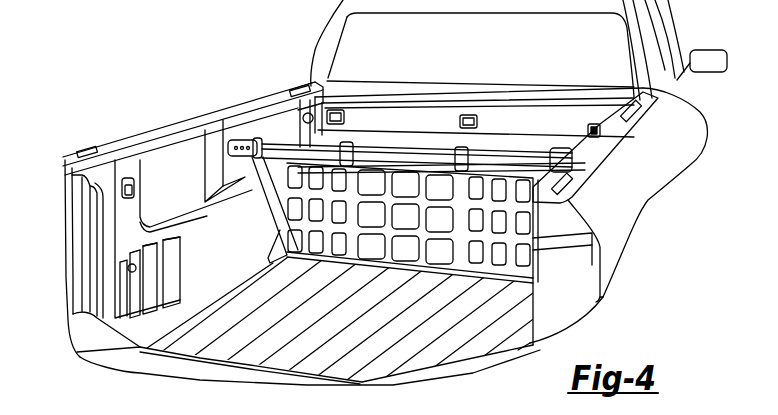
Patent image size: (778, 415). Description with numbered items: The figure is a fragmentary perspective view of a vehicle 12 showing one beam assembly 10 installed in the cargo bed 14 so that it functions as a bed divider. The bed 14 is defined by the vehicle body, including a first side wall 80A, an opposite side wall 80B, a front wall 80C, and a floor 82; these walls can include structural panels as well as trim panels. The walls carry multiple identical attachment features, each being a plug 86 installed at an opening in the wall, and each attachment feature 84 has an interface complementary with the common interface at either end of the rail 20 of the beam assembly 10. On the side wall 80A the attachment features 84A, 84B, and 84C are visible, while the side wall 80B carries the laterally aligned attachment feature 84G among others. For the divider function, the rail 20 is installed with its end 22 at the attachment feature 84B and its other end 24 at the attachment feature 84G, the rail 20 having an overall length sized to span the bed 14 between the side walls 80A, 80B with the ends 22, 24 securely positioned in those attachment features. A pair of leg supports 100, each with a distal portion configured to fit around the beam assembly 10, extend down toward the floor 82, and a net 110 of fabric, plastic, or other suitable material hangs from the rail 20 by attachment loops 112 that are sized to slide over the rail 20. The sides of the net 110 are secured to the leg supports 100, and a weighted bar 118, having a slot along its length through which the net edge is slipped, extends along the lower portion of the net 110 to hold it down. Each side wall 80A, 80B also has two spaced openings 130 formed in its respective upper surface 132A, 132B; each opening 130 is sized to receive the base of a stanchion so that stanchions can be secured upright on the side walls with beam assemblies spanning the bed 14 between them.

The beam assembly 10 is at (359, 109).
The vehicle 12 is at (219, 38).
The cargo bed 14 is at (360, 297).
The rail 20 is at (500, 163).
The end of rail 22 is at (228, 148).
The end of rail 24 is at (590, 155).
The side wall 80A is at (193, 209).
The side wall 80B is at (629, 221).
The front wall 80C is at (470, 107).
The floor 82 is at (412, 364).
The attachment feature 84 is at (136, 270).
The attachment feature 84A is at (141, 187).
The attachment feature 84B is at (242, 135).
The attachment feature 84C is at (314, 115).
The attachment feature 84G is at (558, 147).
The plug 86 is at (128, 198).
The leg support 100 is at (268, 208).
The net 110 is at (412, 233).
The attachment loops 112 is at (347, 142).
The weighted bar 118 is at (460, 269).
The openings 130 is at (87, 150).
The upper surface 132A is at (221, 108).
The upper surface 132B is at (605, 141).